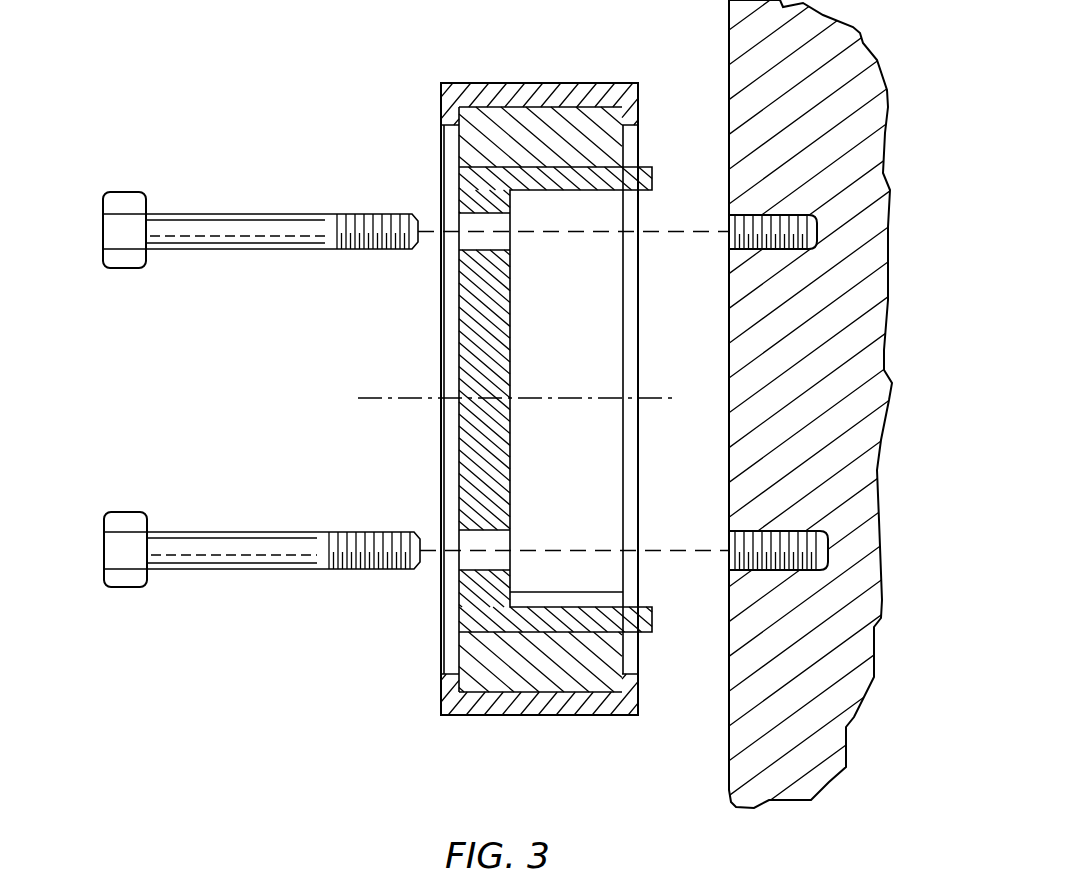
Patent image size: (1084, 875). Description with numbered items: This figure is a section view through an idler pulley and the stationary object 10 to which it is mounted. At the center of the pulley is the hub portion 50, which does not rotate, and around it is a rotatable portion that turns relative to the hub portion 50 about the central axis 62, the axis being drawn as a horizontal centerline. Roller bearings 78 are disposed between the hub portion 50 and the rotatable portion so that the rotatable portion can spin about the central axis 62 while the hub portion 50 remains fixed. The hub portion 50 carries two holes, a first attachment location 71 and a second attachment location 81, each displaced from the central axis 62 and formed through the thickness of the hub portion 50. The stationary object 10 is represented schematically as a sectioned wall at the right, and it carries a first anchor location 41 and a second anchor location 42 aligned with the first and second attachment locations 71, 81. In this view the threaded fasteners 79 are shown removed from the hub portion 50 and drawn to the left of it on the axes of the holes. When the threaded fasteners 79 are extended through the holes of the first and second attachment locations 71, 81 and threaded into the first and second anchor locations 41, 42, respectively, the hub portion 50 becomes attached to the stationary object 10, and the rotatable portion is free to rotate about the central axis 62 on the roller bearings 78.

The stationary object 10 is at (745, 44).
The first anchor location 41 is at (730, 560).
The second anchor location 42 is at (730, 240).
The hub portion 50 is at (467, 333).
The central axis 62 is at (558, 398).
The first attachment location 71 is at (505, 541).
The roller bearings 78 is at (612, 145).
The threaded fasteners 79 is at (215, 230).
The second attachment location 81 is at (507, 240).